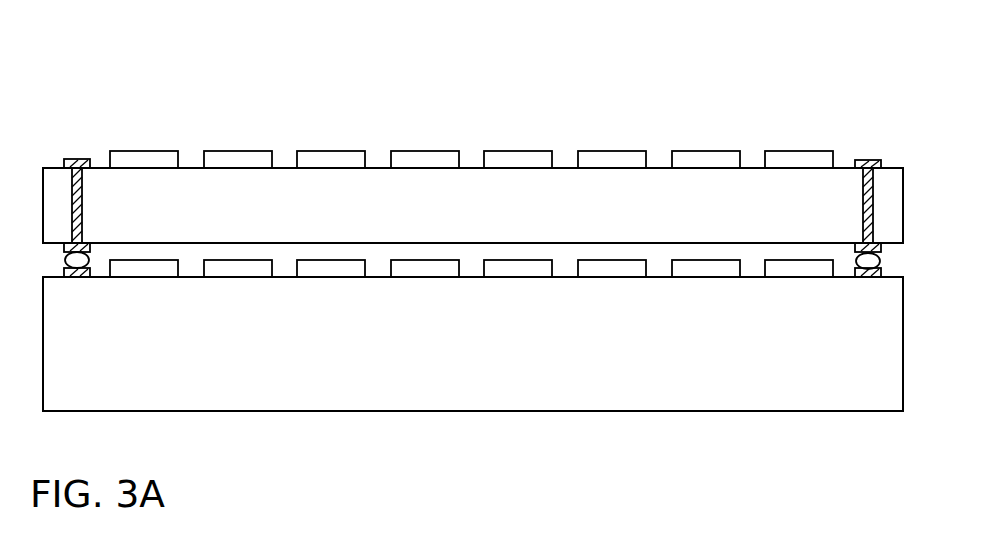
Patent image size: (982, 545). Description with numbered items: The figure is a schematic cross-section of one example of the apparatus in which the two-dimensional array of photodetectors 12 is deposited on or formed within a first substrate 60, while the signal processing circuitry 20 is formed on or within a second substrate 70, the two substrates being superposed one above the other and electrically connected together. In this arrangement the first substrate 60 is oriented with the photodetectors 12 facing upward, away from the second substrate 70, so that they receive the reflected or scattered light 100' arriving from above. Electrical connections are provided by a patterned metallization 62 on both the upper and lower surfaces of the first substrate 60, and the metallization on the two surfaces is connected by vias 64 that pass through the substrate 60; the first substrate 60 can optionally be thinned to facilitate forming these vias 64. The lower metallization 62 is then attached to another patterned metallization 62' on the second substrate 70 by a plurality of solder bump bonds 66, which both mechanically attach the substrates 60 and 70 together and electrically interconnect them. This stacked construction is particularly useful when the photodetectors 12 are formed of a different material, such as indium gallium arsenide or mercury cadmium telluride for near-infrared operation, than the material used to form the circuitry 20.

The reflected or scattered light 100' is at (428, 103).
The photodetectors 12 is at (471, 134).
The signal processing circuitry 20 is at (471, 294).
The first substrate 60 is at (297, 215).
The second substrate 70 is at (102, 373).
The patterned metallization 62 is at (472, 183).
The patterned metallization 62' is at (472, 291).
The vias 64 is at (83, 210).
The solder bump bonds 66 is at (63, 260).